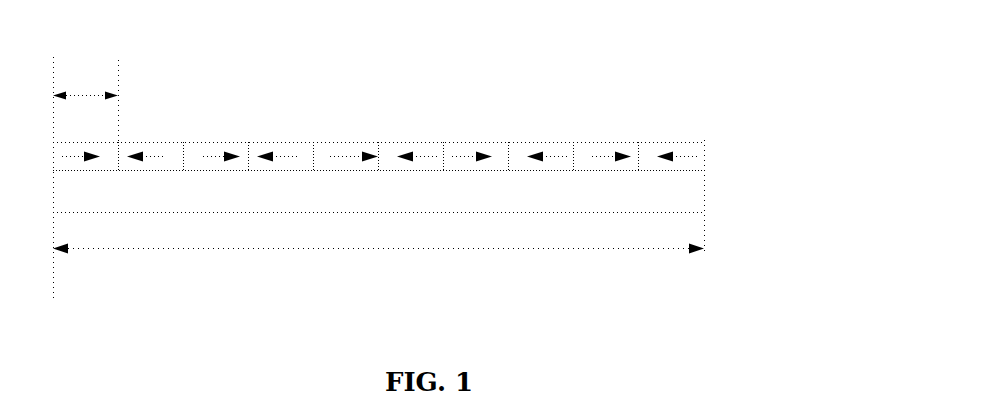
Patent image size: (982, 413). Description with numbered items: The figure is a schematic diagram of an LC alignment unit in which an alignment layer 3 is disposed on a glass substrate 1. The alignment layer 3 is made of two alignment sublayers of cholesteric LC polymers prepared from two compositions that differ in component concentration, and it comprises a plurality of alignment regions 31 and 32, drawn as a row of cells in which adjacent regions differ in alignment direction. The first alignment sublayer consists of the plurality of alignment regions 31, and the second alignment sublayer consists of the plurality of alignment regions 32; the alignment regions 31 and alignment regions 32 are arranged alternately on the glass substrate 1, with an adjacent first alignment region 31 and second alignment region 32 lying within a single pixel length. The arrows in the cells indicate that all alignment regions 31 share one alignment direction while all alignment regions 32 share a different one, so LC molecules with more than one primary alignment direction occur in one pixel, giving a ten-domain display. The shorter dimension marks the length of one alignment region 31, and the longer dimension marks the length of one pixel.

The glass substrate 1 is at (692, 210).
The alignment layer 3 is at (575, 130).
The alignment region 31 is at (693, 147).
The alignment region 32 is at (587, 148).